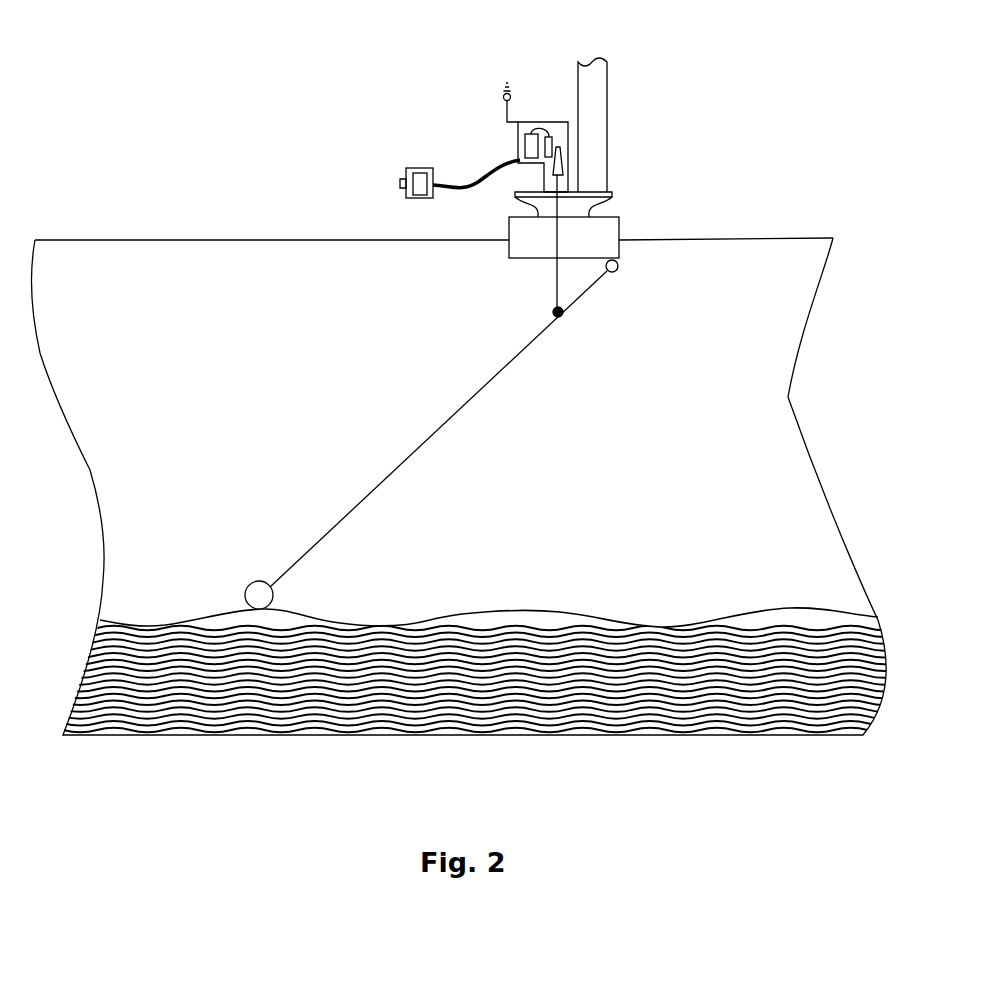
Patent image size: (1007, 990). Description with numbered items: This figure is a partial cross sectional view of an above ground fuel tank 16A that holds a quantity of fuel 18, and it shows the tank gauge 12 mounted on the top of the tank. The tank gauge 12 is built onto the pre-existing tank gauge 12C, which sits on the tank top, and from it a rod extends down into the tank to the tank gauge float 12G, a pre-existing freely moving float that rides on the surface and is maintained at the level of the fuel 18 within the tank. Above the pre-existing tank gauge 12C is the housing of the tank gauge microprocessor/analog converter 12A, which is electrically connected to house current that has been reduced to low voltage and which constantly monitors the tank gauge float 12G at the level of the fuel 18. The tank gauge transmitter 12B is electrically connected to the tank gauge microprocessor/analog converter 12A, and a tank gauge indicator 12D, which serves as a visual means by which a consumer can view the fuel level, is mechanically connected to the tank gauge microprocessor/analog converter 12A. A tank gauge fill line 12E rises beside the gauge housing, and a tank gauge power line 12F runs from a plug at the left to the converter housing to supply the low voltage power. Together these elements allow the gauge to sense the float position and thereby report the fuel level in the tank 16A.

The tank gauge 12 is at (557, 120).
The tank gauge microprocessor/analog converter 12A is at (569, 155).
The tank gauge transmitter 12B is at (524, 147).
The pre-existing tank gauge 12C is at (562, 207).
The tank gauge indicator 12D is at (542, 177).
The tank gauge fill line 12E is at (608, 112).
The tank gauge power line 12F is at (409, 165).
The tank gauge float 12G is at (276, 595).
The above ground fuel tank 16A is at (785, 237).
The fuel 18 is at (493, 720).